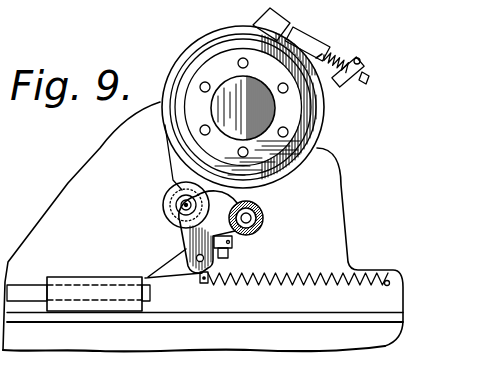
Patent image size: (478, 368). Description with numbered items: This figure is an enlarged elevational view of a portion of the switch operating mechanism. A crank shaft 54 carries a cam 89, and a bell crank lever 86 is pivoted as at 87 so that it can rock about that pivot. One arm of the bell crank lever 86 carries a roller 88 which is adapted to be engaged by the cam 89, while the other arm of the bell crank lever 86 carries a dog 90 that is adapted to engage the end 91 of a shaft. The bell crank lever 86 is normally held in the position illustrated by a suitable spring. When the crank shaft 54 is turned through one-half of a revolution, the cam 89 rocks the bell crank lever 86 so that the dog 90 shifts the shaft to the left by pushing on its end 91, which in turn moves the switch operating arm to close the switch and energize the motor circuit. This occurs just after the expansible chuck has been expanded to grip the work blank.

The crank shaft 54 is at (250, 111).
The bell crank lever 86 is at (240, 237).
The pivot 87 is at (183, 203).
The roller 88 is at (264, 221).
The cam 89 is at (275, 180).
The dog 90 is at (148, 277).
The end of shaft 91 is at (150, 292).